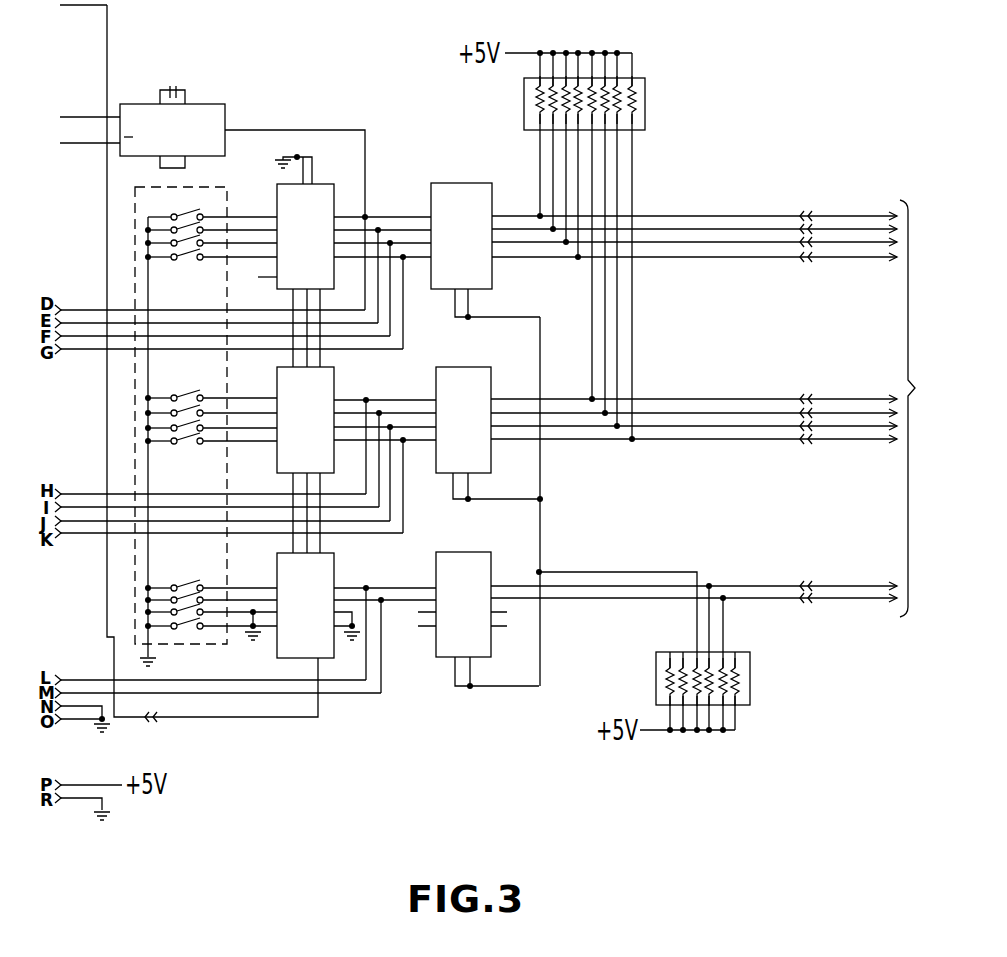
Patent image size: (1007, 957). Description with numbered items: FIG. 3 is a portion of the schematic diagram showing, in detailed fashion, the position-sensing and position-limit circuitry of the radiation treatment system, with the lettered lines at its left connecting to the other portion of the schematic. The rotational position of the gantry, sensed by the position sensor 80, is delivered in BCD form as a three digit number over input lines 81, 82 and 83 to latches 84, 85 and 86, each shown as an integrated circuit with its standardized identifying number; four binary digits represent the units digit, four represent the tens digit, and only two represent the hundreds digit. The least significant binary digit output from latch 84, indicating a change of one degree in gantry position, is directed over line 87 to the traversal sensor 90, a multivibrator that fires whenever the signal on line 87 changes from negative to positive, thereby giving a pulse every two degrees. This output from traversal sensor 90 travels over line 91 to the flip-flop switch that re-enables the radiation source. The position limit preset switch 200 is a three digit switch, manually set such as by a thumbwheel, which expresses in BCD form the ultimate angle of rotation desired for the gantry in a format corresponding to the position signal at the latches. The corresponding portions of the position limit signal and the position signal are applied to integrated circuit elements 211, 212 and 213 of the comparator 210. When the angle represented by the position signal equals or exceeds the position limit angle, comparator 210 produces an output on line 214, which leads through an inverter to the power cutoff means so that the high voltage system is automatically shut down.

The position sensor 80 is at (922, 408).
The input line 81 is at (880, 266).
The input line 82 is at (887, 452).
The input line 83 is at (886, 620).
The latch 84 is at (460, 180).
The latch 85 is at (491, 377).
The latch 86 is at (493, 560).
The line 87 is at (366, 160).
The traversal sensor 90 is at (228, 105).
The line 91 is at (80, 148).
The position limit preset switch 200 is at (208, 186).
The comparator 210 is at (316, 148).
The integrated circuit element 211 is at (289, 257).
The integrated circuit element 212 is at (336, 378).
The integrated circuit element 213 is at (335, 562).
The line 214 is at (320, 703).